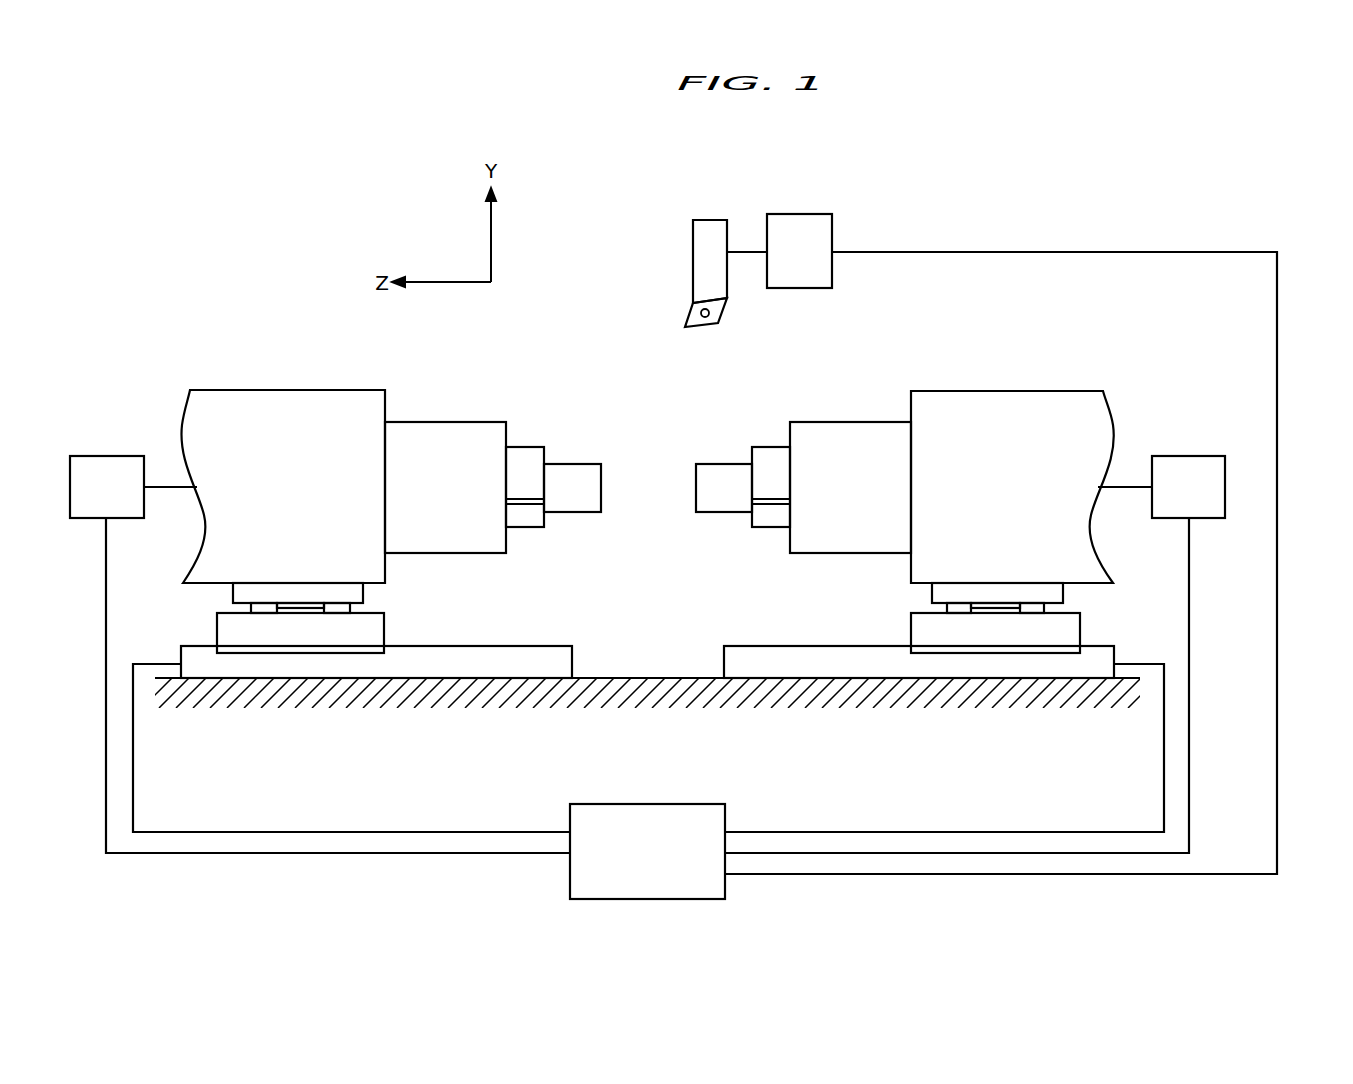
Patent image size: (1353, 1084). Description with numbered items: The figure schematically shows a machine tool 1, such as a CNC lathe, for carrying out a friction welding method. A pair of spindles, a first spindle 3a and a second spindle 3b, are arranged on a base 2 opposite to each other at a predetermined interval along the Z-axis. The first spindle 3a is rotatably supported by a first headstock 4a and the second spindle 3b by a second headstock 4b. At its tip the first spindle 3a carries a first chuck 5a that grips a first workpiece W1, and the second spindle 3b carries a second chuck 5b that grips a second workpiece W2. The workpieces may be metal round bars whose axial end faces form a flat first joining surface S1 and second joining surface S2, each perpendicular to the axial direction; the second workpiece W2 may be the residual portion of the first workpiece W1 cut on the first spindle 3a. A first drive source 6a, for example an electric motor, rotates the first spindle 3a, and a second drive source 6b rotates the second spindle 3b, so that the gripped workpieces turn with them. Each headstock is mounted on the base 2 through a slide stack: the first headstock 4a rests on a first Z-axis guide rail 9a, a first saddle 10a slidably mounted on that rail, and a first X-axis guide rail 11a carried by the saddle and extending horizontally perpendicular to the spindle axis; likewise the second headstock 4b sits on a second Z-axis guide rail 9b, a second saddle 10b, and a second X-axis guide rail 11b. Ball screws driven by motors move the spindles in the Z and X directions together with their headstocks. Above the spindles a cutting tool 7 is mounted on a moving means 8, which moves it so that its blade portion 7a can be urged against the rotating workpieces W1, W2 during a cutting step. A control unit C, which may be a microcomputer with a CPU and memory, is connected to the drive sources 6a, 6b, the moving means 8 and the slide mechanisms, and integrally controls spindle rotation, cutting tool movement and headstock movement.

The machine tool 1 is at (1243, 169).
The base 2 is at (642, 692).
The first spindle 3a is at (450, 437).
The second spindle 3b is at (843, 437).
The first headstock 4a is at (278, 407).
The second headstock 4b is at (993, 405).
The first chuck 5a is at (525, 462).
The second chuck 5b is at (769, 462).
The first drive source 6a is at (108, 470).
The second drive source 6b is at (1187, 468).
The cutting tool 7 is at (680, 237).
The blade portion 7a is at (693, 313).
The moving means 8 is at (817, 235).
The first Z-axis guide rail 9a is at (494, 660).
The second Z-axis guide rail 9b is at (803, 660).
The first saddle 10a is at (303, 634).
The second saddle 10b is at (992, 636).
The first X-axis guide rail 11a is at (255, 608).
The second X-axis guide rail 11b is at (953, 608).
The first workpiece W1 is at (574, 478).
The second workpiece W2 is at (722, 478).
The first joining surface S1 is at (601, 483).
The second joining surface S2 is at (696, 489).
The control unit C is at (653, 881).